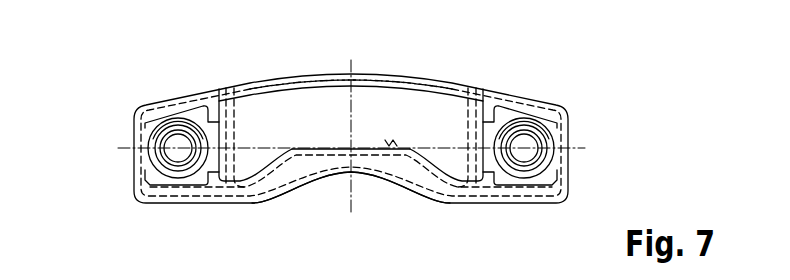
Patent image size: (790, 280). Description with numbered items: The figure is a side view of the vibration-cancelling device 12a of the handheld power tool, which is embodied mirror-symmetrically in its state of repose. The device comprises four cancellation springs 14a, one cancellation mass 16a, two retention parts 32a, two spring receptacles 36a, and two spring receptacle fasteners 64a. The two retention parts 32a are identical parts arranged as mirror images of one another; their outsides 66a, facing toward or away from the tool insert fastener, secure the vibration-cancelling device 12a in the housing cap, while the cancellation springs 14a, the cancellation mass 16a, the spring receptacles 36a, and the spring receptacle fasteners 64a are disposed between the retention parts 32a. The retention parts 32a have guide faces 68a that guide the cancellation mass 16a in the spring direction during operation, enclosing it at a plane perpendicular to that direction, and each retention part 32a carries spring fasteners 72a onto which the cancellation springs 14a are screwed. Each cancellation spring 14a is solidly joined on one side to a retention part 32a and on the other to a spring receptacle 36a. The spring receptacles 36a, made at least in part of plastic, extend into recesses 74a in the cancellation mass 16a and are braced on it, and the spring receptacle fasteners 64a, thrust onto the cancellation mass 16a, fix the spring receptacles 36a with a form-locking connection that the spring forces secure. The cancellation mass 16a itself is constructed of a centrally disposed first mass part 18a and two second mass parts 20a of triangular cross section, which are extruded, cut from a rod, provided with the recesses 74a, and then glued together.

The vibration-cancelling device 12a is at (168, 88).
The cancellation springs 14a is at (156, 133).
The cancellation mass 16a is at (364, 70).
The first mass part 18a is at (393, 102).
The second mass parts 20a is at (247, 167).
The retention parts 32a is at (290, 186).
The spring receptacles 36a is at (142, 178).
The spring receptacle fasteners 64a is at (315, 82).
The outsides 66a is at (330, 160).
The guide faces 68a is at (418, 88).
The spring fasteners 72a is at (178, 158).
The recesses 74a is at (227, 93).